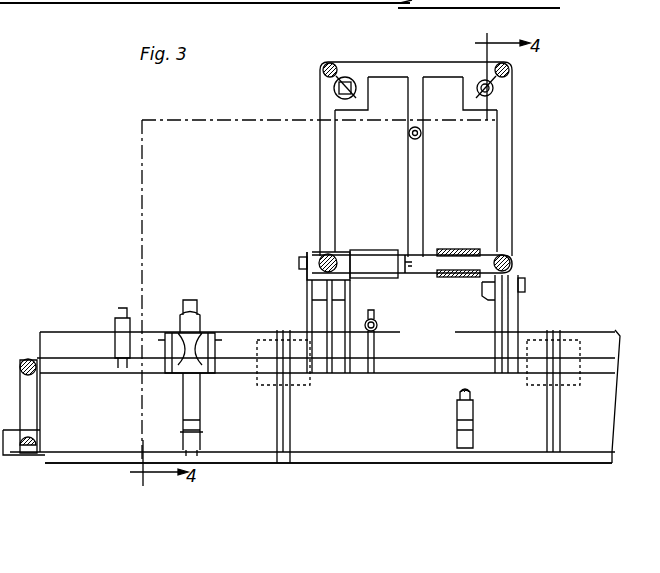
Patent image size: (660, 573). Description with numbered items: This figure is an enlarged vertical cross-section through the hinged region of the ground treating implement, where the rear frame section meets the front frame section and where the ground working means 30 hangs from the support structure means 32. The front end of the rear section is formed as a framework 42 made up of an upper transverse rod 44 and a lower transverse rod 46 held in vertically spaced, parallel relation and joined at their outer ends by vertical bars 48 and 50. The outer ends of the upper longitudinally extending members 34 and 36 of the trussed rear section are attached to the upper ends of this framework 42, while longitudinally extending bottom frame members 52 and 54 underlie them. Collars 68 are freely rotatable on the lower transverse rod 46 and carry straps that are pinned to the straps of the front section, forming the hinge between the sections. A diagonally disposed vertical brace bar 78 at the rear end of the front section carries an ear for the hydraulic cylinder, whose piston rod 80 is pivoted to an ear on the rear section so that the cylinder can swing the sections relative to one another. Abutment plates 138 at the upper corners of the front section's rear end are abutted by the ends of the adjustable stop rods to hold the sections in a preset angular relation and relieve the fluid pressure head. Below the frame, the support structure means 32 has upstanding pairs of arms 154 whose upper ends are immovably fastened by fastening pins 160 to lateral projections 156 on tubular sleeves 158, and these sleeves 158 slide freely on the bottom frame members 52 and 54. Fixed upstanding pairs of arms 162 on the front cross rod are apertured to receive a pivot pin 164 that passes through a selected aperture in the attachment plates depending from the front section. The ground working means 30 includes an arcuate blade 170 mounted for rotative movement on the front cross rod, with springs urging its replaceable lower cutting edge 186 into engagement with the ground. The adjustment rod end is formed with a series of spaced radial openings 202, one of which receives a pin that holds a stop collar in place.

The ground working means 30 is at (358, 450).
The support structure means 32 is at (27, 352).
The upper longitudinally extending member 34 is at (320, 70).
The upper longitudinally extending member 36 is at (511, 68).
The framework 42 is at (510, 150).
The upper transverse rod 44 is at (382, 66).
The lower transverse rod 46 is at (426, 256).
The vertical bar 48 is at (510, 192).
The vertical bar 50 is at (332, 198).
The bottom frame member 52 is at (506, 262).
The bottom frame member 54 is at (332, 254).
The collar 68 is at (383, 250).
The diagonally disposed vertical brace bar 78 is at (418, 190).
The piston rod 80 is at (421, 134).
The abutment plate 138 is at (326, 108).
The arm 154 is at (330, 300).
The lateral projection 156 is at (310, 252).
The tubular sleeve 158 is at (322, 248).
The fastening pin 160 is at (300, 263).
The arm 162 is at (512, 312).
The pivot pin 164 is at (510, 276).
The arcuate blade 170 is at (240, 440).
The lower cutting edge 186 is at (404, 3).
The radial opening 202 is at (192, 392).